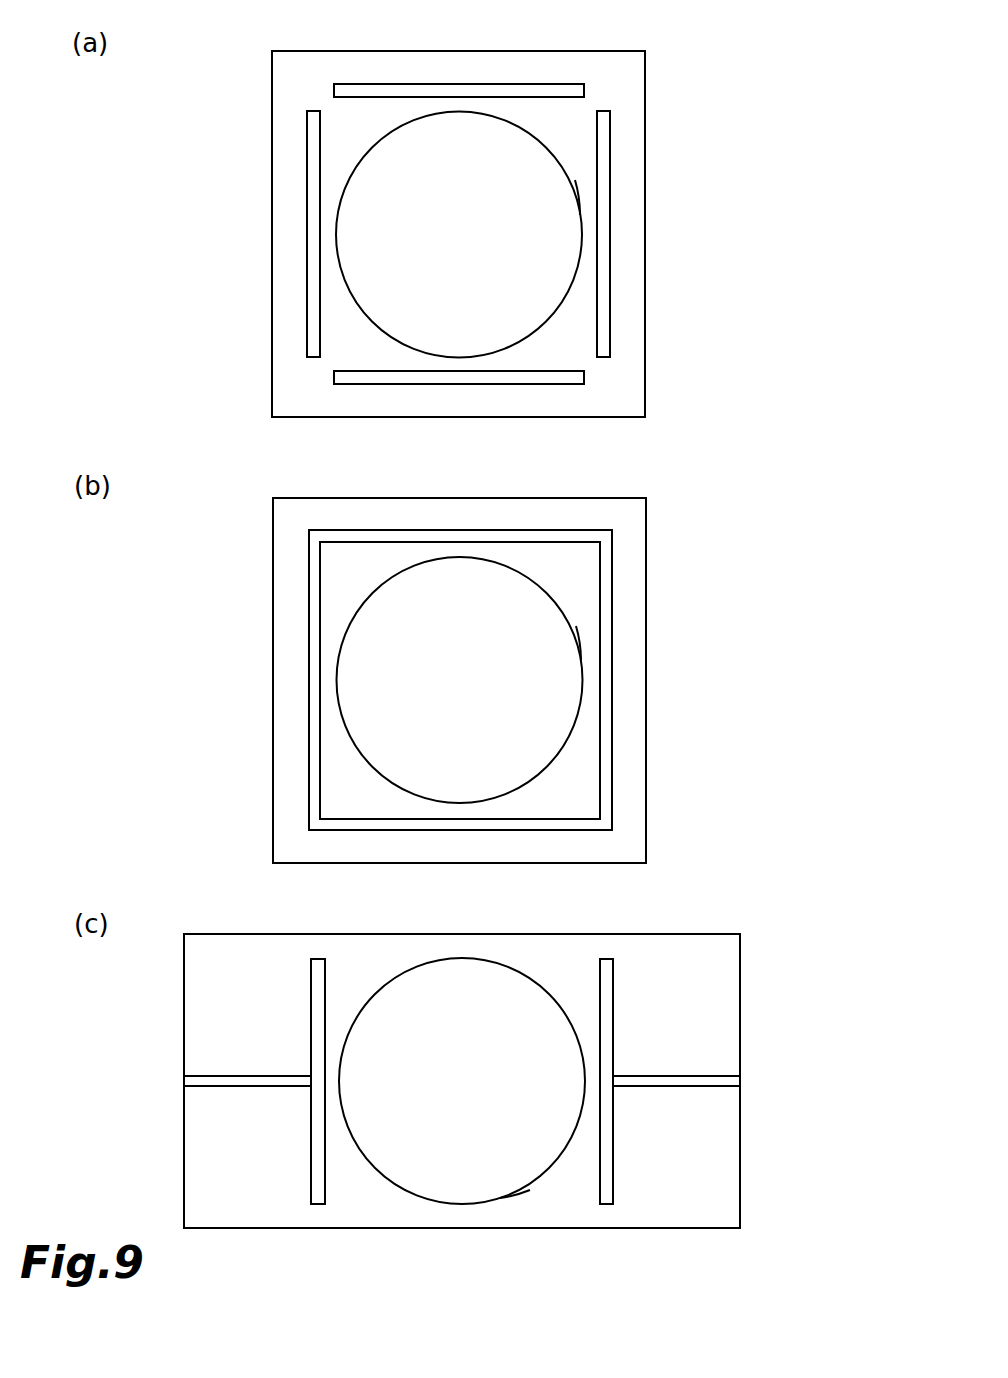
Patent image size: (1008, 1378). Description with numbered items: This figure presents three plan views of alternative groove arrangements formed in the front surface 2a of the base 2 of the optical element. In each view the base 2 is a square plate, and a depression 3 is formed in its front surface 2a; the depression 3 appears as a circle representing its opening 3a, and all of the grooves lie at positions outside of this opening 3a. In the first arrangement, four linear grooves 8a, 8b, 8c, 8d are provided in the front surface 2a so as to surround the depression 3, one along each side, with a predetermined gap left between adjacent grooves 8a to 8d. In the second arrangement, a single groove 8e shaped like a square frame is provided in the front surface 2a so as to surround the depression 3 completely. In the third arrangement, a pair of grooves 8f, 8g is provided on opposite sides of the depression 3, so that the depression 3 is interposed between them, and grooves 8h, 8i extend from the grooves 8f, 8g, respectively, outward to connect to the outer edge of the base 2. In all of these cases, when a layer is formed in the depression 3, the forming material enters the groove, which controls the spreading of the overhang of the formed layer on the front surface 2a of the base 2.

The base 2 is at (645, 88).
The front surface 2a is at (557, 344).
The depression 3 is at (549, 241).
The opening 3a is at (577, 190).
The linear groove 8a is at (458, 94).
The linear groove 8b is at (604, 297).
The linear groove 8c is at (460, 376).
The linear groove 8d is at (313, 298).
The groove shaped like a square frame 8e is at (607, 745).
The groove 8f is at (318, 1195).
The groove 8g is at (607, 1195).
The groove 8h is at (246, 1080).
The groove 8i is at (678, 1080).